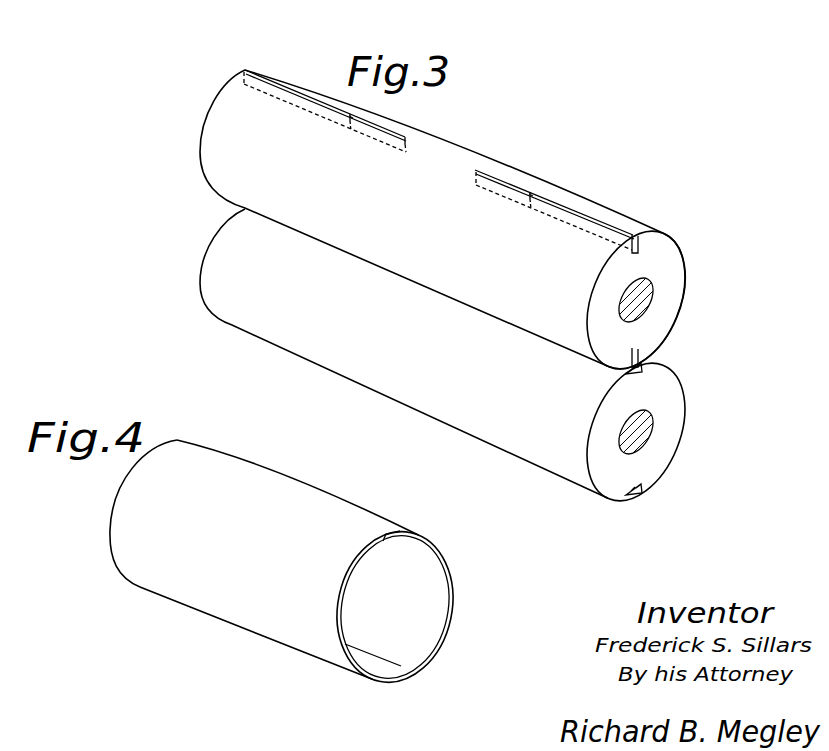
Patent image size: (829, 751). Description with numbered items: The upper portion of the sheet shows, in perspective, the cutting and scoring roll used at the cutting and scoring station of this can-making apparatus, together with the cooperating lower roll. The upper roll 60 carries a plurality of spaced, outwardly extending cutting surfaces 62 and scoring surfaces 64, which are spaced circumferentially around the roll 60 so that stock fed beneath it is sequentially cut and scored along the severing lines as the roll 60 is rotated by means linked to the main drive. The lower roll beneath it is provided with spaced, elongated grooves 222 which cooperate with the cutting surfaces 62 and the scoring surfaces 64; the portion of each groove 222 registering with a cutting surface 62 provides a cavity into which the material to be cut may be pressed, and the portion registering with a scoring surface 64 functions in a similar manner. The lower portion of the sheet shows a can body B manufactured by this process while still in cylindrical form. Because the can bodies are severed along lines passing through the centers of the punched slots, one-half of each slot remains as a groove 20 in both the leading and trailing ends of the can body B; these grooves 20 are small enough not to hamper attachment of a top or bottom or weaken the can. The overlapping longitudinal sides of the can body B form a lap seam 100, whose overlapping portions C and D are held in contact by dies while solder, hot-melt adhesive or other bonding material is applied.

In FIG. 3, the upper roll 60 is at (678, 270).
In FIG. 3, the cutting surfaces 62 is at (279, 86).
In FIG. 3, the scoring surfaces 64 is at (388, 131).
In FIG. 3, the elongated grooves 222 is at (640, 363).
In FIG. 4, the groove 20 is at (172, 440).
In FIG. 4, the can body B is at (450, 600).
In FIG. 4, the overlapping portion of side seam C is at (375, 657).
In FIG. 4, the overlapping portion of side seam D is at (389, 683).
In FIG. 4, the lap seam 100 is at (393, 678).